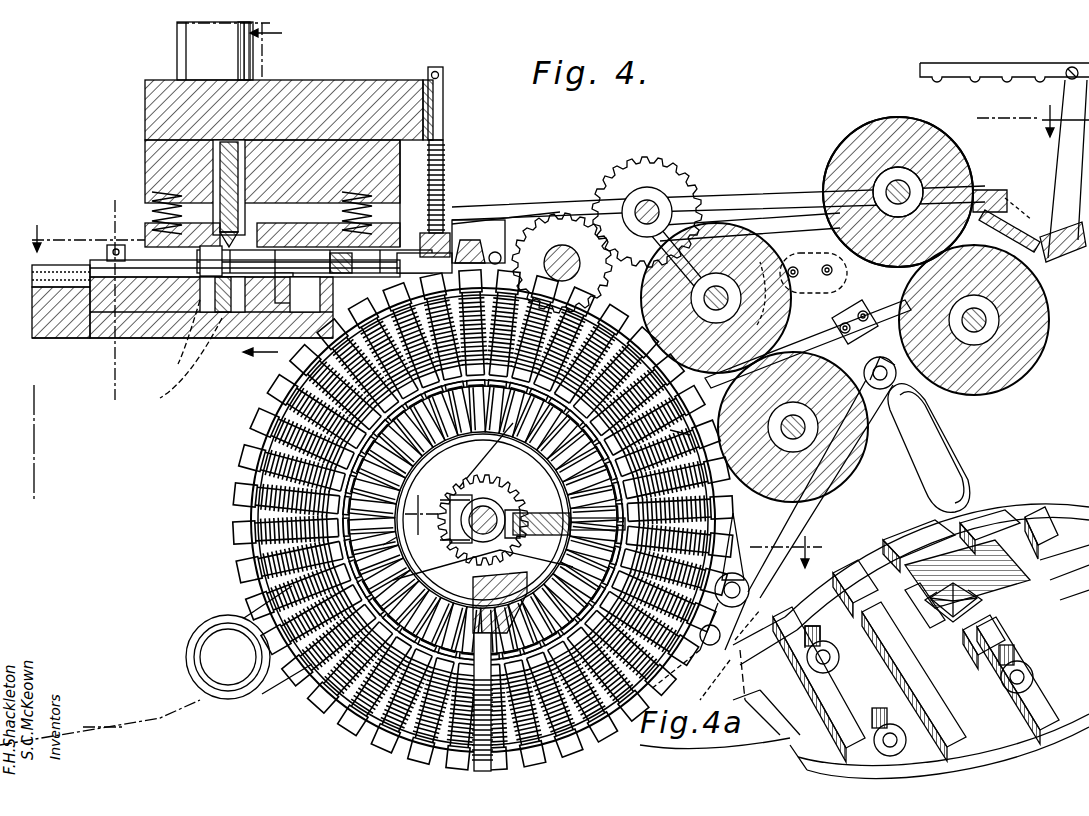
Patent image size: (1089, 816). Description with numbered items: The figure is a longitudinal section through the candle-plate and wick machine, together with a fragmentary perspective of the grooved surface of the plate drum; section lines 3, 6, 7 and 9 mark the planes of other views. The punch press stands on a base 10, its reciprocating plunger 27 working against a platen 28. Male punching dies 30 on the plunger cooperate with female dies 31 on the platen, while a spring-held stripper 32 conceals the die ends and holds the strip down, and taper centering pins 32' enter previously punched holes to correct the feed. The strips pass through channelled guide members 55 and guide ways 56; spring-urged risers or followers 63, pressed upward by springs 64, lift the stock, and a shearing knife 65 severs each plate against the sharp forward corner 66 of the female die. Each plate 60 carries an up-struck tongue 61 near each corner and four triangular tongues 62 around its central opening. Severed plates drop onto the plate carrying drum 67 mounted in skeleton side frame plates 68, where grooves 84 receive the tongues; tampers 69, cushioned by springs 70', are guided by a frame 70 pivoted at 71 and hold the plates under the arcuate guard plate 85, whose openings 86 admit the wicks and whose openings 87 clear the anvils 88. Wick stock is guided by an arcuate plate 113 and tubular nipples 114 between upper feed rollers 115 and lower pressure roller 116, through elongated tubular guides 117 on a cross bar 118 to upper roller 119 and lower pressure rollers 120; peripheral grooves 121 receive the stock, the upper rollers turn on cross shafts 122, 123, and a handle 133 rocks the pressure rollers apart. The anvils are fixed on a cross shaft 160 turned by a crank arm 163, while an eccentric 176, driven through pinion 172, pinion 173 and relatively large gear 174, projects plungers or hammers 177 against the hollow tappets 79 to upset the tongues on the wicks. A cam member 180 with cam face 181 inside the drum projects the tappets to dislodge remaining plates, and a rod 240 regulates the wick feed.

In FIG. 4, the section line 3- 3 is at (548, 178).
In FIG. 4, the section line 6- 6 is at (853, 316).
In FIG. 4, the section line 7- 7 is at (612, 531).
In FIG. 4, the section line 9- 9 is at (229, 186).
In FIG. 4, the base 10 is at (80, 453).
In FIG. 4, the reciprocating plunger 27 is at (147, 118).
In FIG. 4, the platen 28 is at (40, 302).
In FIG. 4, the male punching dies 30 is at (272, 193).
In FIG. 4, the female dies 31 is at (105, 312).
In FIG. 4, the stripper 32 is at (247, 213).
In FIG. 4, the centering pins 32' is at (314, 274).
In FIG. 4, the channelled guide members 55 is at (60, 262).
In FIG. 4, the guide ways 56 is at (140, 258).
In FIG. 4A, the plate 60 is at (931, 634).
In FIG. 4A, the up-struck tongue 61 is at (940, 626).
In FIG. 4A, the triangular tongues 62 is at (954, 603).
In FIG. 4, the risers or followers 63 is at (215, 318).
In FIG. 4A, the risers or followers 63 is at (919, 687).
In FIG. 4, the springs 64 is at (184, 341).
In FIG. 4, the shearing knife 65 is at (445, 200).
In FIG. 4, the sharp forward corner 66 is at (420, 260).
In FIG. 4, the plate carrying drum 67 is at (222, 500).
In FIG. 4A, the plate carrying drum 67 is at (865, 551).
In FIG. 4, the skeleton side frame plates 68 is at (590, 205).
In FIG. 4, the tampers 69 is at (530, 204).
In FIG. 4, the frame 70 is at (478, 242).
In FIG. 4, the springs 70' is at (461, 198).
In FIG. 4, the pivot 71 is at (634, 247).
In FIG. 4, the tappets 79 is at (528, 745).
In FIG. 4, the grooves 84 is at (245, 422).
In FIG. 4A, the grooves 84 is at (980, 770).
In FIG. 4, the arcuate guard plate 85 is at (562, 263).
In FIG. 4, the openings 86 is at (503, 520).
In FIG. 4, the openings 87 is at (733, 513).
In FIG. 4, the anvils 88 is at (745, 572).
In FIG. 4, the arcuate plate 113 is at (1065, 258).
In FIG. 4, the tubular nipples 114 is at (985, 190).
In FIG. 4, the upper feed rollers 115 is at (855, 135).
In FIG. 4, the lower pressure roller 116 is at (995, 388).
In FIG. 4, the elongated tubular guides 117 is at (808, 320).
In FIG. 4, the cross bar 118 is at (850, 345).
In FIG. 4, the upper roller 119 is at (722, 230).
In FIG. 4, the lower pressure rollers 120 is at (838, 488).
In FIG. 4, the peripheral grooves 121 is at (940, 135).
In FIG. 4, the cross shaft 122 is at (905, 185).
In FIG. 4, the cross shaft 123 is at (760, 262).
In FIG. 4, the handle 133 is at (945, 452).
In FIG. 4, the cross shaft 160 is at (685, 657).
In FIG. 4, the crank arm 163 is at (716, 655).
In FIG. 4, the pinion 172 is at (483, 514).
In FIG. 4, the pinion 173 is at (590, 195).
In FIG. 4, the relatively large gear 174 is at (474, 442).
In FIG. 4, the eccentric 176 is at (483, 520).
In FIG. 4, the plungers or hammers 177 is at (540, 512).
In FIG. 4, the cam member 180 is at (484, 602).
In FIG. 4, the cam face 181 is at (478, 560).
In FIG. 4, the rod 240 is at (1035, 74).